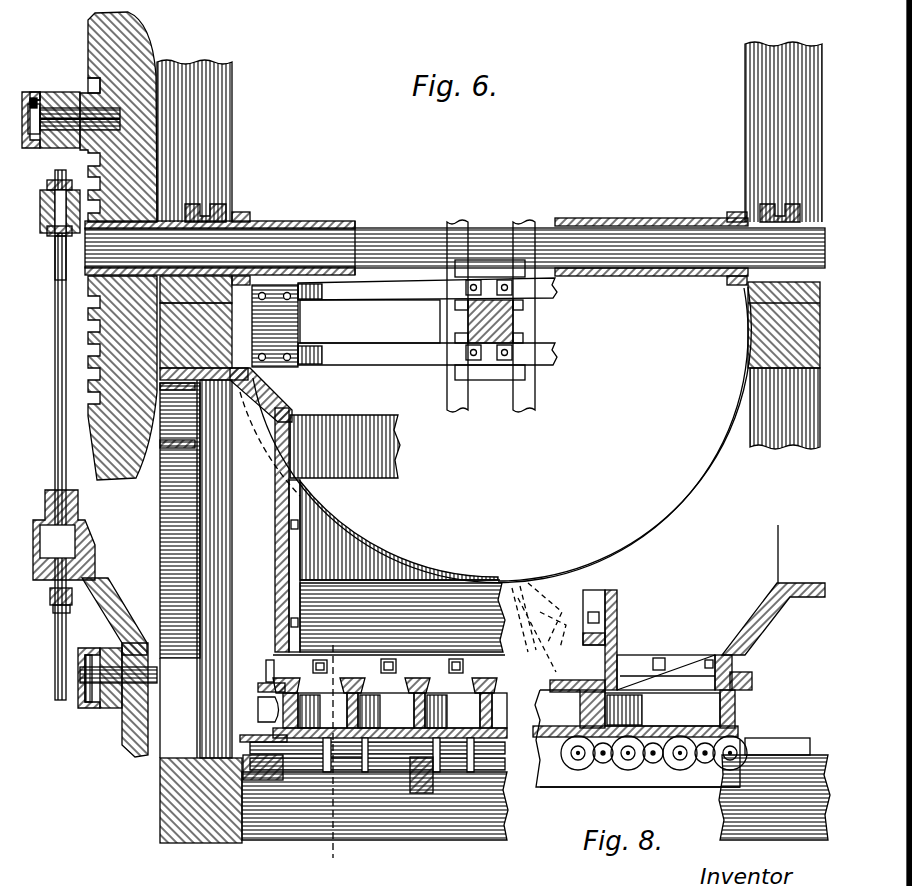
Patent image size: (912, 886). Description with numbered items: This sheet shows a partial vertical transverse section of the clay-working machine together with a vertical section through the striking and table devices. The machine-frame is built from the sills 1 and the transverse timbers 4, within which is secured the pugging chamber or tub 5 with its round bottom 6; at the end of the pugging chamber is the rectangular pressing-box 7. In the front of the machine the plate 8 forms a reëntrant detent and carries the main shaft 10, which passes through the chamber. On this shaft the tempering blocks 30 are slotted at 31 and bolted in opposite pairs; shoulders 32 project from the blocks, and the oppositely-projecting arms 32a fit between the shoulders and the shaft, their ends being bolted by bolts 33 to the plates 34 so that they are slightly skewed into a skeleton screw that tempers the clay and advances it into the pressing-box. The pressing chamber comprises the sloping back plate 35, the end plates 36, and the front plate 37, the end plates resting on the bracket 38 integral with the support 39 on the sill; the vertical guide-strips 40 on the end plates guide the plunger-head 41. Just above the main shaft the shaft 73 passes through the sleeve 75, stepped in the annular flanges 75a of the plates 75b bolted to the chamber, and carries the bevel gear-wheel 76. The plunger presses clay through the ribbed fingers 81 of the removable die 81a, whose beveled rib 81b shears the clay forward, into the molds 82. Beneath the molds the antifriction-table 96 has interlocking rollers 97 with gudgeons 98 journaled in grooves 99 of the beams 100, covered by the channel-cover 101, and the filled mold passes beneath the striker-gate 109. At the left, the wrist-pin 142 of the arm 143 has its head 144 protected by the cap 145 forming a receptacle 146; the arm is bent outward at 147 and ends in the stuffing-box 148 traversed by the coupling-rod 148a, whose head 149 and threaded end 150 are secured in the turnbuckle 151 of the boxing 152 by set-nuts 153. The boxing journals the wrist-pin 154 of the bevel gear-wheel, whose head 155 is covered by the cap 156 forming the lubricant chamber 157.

In FIG. 6, the sills 1 is at (164, 810).
In FIG. 8, the sills 1 is at (775, 830).
In FIG. 6, the transverse timbers 4 is at (431, 830).
In FIG. 6, the pugging chamber or tub 5 is at (494, 435).
In FIG. 6, the round bottom 6 is at (500, 578).
In FIG. 6, the rectangular pressing-box 7 is at (302, 554).
In FIG. 6, the plate 8 is at (332, 761).
In FIG. 6, the main shaft 10 is at (530, 322).
In FIG. 6, the blocks 30 is at (494, 370).
In FIG. 6, the slots 31 is at (457, 340).
In FIG. 6, the shoulders 32 is at (528, 370).
In FIG. 6, the oppositely-projecting arms 32a is at (352, 343).
In FIG. 6, the bolts 33 is at (265, 300).
In FIG. 6, the plates 34 is at (275, 326).
In FIG. 6, the sloping back plate 35 is at (300, 606).
In FIG. 8, the sloping back plate 35 is at (757, 624).
In FIG. 6, the end plates 36 is at (302, 596).
In FIG. 8, the front plate 37 is at (617, 605).
In FIG. 6, the bracket 38 is at (178, 452).
In FIG. 6, the support 39 is at (175, 708).
In FIG. 6, the vertical guide-strips 40 is at (290, 509).
In FIG. 6, the plunger-head 41 is at (345, 446).
In FIG. 6, the shaft 73 is at (305, 232).
In FIG. 6, the sleeve 75 is at (386, 230).
In FIG. 6, the annular flanges 75a is at (243, 214).
In FIG. 6, the plates 75b is at (218, 210).
In FIG. 6, the bevel gear-wheel 76 is at (147, 48).
In FIG. 6, the ribbed fingers 81 is at (410, 679).
In FIG. 8, the ribbed fingers 81 is at (696, 680).
In FIG. 6, the removable die 81a is at (435, 680).
In FIG. 8, the removable die 81a is at (735, 690).
In FIG. 6, the beveled rib 81b is at (350, 671).
In FIG. 8, the beveled rib 81b is at (682, 668).
In FIG. 6, the molds 82 is at (403, 710).
In FIG. 8, the molds 82 is at (662, 709).
In FIG. 8, the antifriction-table 96 is at (640, 780).
In FIG. 6, the interlocking rollers 97 is at (378, 770).
In FIG. 8, the interlocking rollers 97 is at (580, 760).
In FIG. 6, the gudgeons 98 is at (500, 752).
In FIG. 8, the gudgeons 98 is at (702, 760).
In FIG. 6, the grooves 99 is at (268, 780).
In FIG. 6, the beams 100 is at (283, 776).
In FIG. 6, the channel-cover 101 is at (250, 741).
In FIG. 8, the striker-gate 109 is at (582, 680).
In FIG. 6, the wrist-pin 142 is at (138, 668).
In FIG. 6, the arm 143 is at (108, 602).
In FIG. 6, the head 144 is at (78, 660).
In FIG. 6, the cap 145 is at (85, 695).
In FIG. 6, the receptacle 146 is at (92, 708).
In FIG. 6, the bend 147 is at (54, 597).
In FIG. 6, the stuffing-box 148 is at (42, 522).
In FIG. 6, the coupling-rod 148a is at (56, 450).
In FIG. 6, the head 149 is at (57, 600).
In FIG. 6, the threaded end 150 is at (50, 184).
In FIG. 6, the turnbuckle 151 is at (48, 218).
In FIG. 6, the boxing 152 is at (52, 92).
In FIG. 6, the set-nuts 153 is at (47, 205).
In FIG. 6, the wrist-pin 154 is at (74, 119).
In FIG. 6, the head 155 is at (38, 93).
In FIG. 6, the cap 156 is at (24, 93).
In FIG. 6, the chamber 157 is at (32, 96).